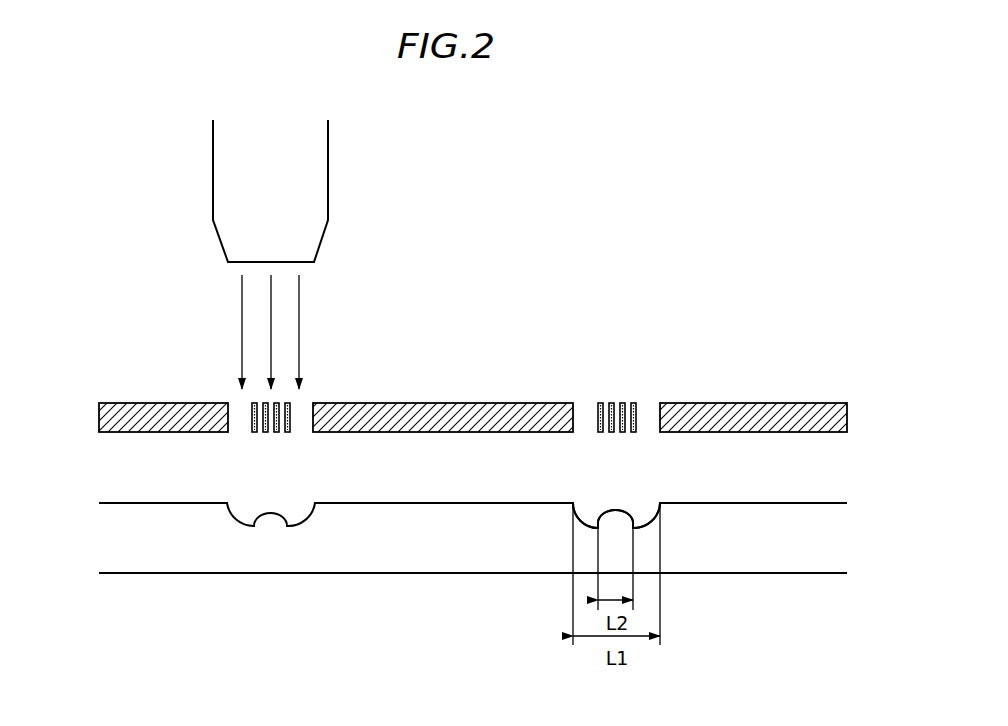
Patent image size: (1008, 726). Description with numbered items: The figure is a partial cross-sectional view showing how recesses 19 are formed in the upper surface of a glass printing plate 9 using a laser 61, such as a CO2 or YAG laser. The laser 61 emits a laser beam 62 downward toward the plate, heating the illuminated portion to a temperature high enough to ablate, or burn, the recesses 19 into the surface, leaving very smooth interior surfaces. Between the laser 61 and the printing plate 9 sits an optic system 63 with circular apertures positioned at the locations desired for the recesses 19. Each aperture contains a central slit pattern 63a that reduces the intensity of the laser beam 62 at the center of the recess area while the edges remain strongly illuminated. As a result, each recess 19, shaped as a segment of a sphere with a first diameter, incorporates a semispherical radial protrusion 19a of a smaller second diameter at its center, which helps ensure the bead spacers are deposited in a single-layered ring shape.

The printing plate 9 is at (828, 538).
The recess 19 is at (595, 515).
The semispherical radial protrusion 19a is at (618, 512).
The laser 61 is at (328, 168).
The laser beam 62 is at (299, 332).
The optic system 63 is at (443, 403).
The central slit pattern 63a is at (290, 428).